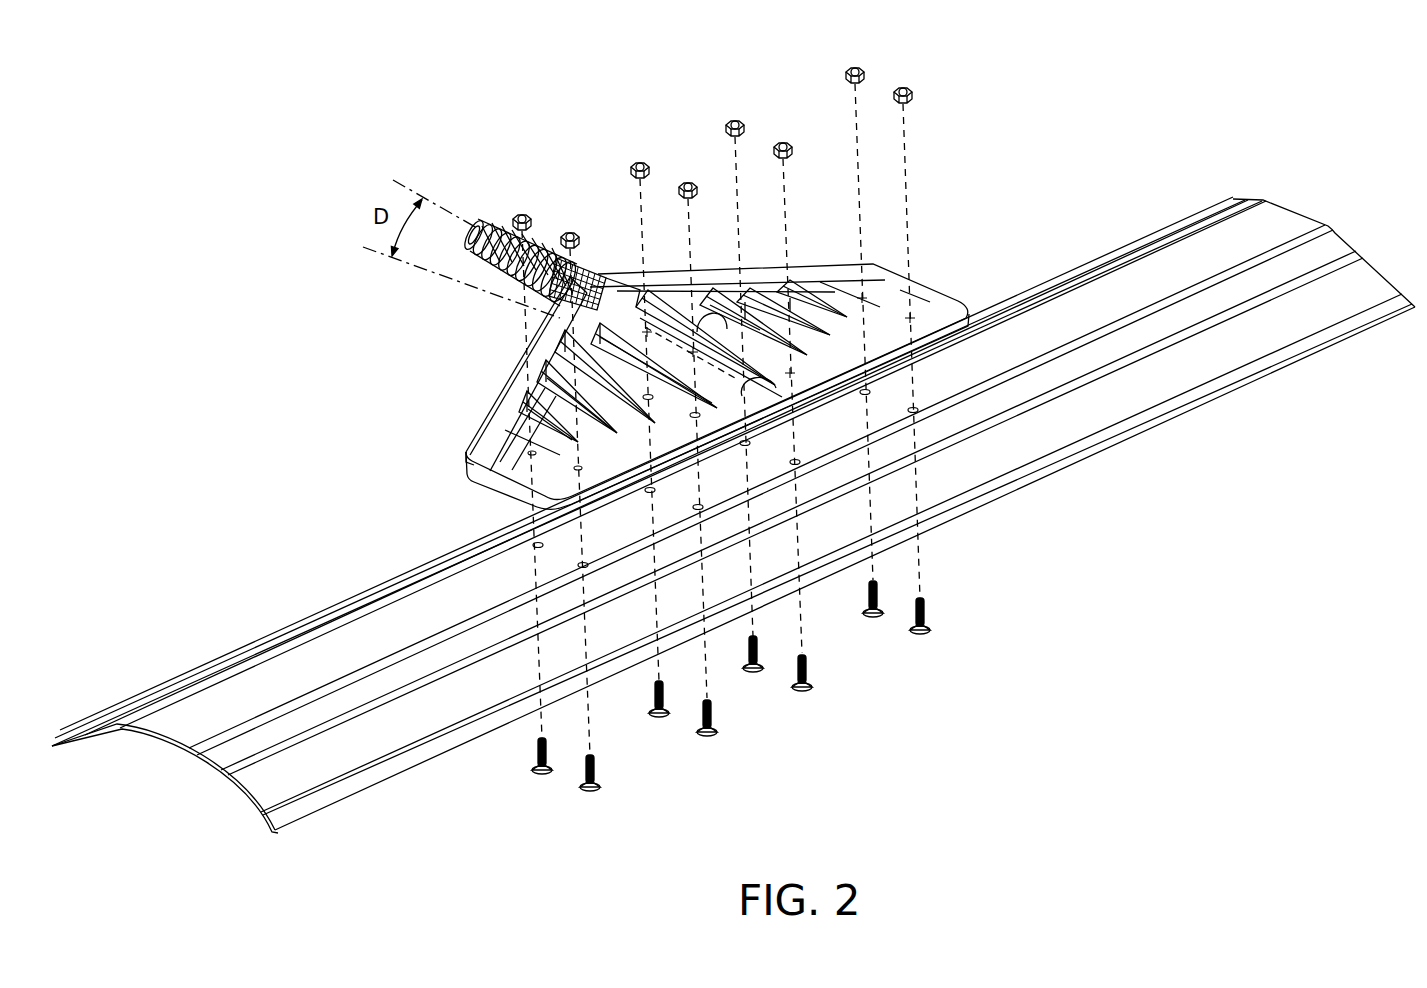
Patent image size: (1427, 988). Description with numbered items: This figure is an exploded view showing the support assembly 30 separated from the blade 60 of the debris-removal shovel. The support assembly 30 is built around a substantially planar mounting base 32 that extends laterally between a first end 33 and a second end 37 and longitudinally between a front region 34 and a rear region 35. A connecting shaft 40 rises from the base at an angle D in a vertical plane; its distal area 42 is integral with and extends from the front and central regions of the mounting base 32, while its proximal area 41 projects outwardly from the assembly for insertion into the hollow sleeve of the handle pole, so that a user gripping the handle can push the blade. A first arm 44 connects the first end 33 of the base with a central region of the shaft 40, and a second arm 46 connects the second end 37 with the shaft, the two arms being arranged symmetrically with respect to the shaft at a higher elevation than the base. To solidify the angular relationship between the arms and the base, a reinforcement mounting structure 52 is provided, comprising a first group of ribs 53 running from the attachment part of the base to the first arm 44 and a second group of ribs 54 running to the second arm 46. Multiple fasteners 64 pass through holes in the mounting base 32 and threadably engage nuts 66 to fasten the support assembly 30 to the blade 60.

The support assembly 30 is at (606, 176).
The mounting base 32 is at (883, 293).
The first end 33 is at (466, 460).
The front region 34 is at (812, 372).
The rear region 35 is at (520, 473).
The second end 37 is at (940, 296).
The connecting shaft 40 is at (500, 278).
The proximal area 41 is at (488, 222).
The distal area 42 is at (703, 300).
The first arm 44 is at (518, 410).
The second arm 46 is at (817, 275).
The reinforcement mounting structure 52 is at (556, 453).
The first group of ribs 53 is at (533, 410).
The second group of ribs 54 is at (752, 300).
The blade 60 is at (1258, 378).
The fasteners 64 is at (922, 636).
The nuts 66 is at (856, 64).